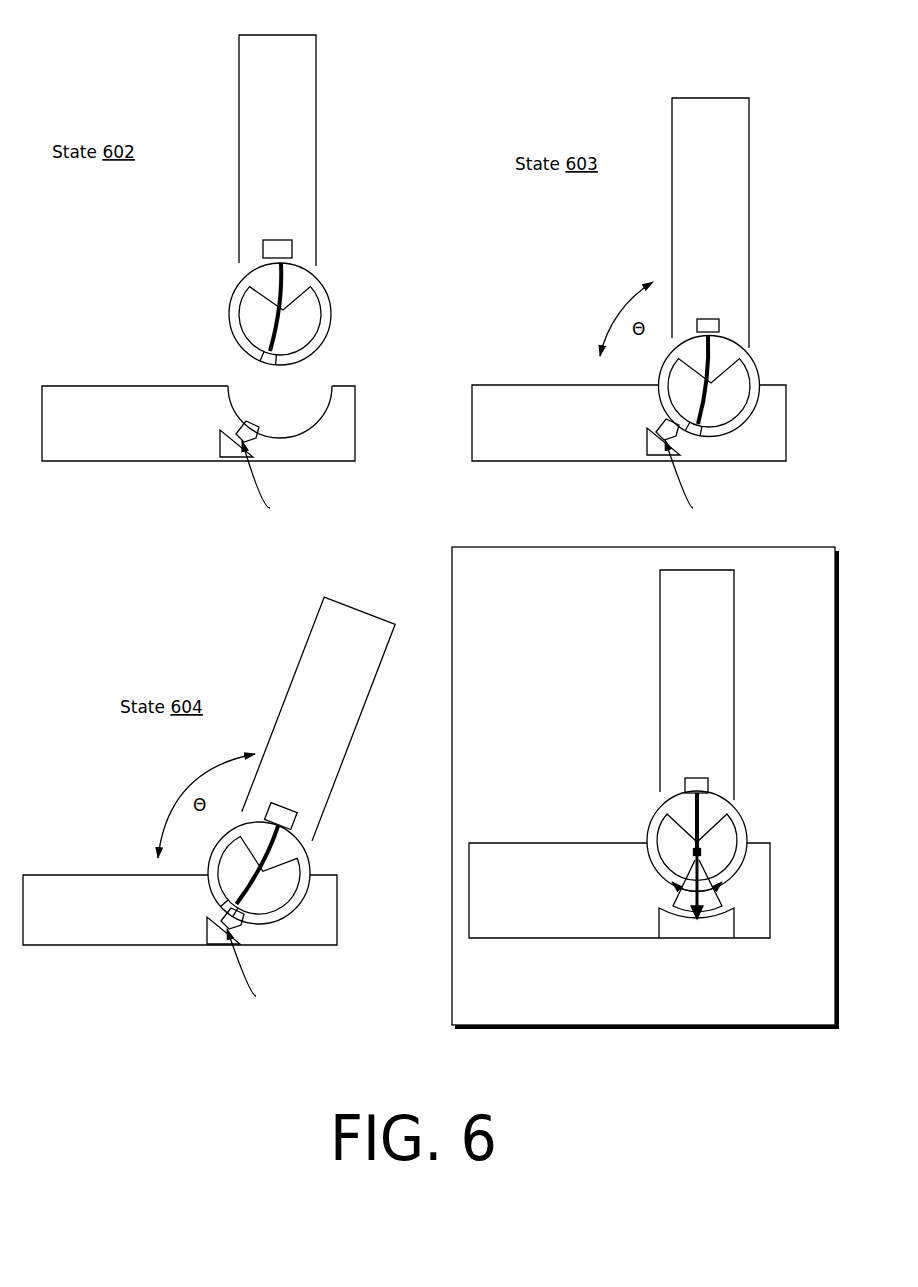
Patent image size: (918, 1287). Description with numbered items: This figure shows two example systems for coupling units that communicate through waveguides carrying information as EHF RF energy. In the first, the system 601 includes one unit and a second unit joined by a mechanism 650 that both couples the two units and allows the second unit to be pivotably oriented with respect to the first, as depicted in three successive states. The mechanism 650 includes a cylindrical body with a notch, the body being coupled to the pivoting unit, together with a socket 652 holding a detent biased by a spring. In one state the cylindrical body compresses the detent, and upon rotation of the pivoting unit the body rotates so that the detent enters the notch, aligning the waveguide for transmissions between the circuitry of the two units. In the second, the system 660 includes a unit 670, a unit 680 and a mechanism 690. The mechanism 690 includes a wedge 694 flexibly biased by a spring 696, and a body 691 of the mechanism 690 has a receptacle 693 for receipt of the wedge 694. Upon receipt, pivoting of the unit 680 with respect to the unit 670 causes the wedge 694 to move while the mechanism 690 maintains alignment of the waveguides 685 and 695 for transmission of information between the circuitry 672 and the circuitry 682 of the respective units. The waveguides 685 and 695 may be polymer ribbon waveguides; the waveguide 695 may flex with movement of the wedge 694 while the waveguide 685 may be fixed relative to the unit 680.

The system 601 is at (146, 82).
The mechanism 650 is at (197, 313).
The socket 652 is at (332, 385).
The system 660 is at (593, 624).
The unit 670 is at (568, 843).
The circuitry 672 is at (672, 938).
The unit 680 is at (734, 640).
The circuitry 682 is at (708, 780).
The waveguide 685 is at (700, 825).
The mechanism 690 is at (638, 796).
The body 691 is at (742, 867).
The receptacle 693 is at (702, 856).
The wedge 694 is at (712, 902).
The waveguide 695 is at (693, 903).
The spring 696 is at (700, 918).